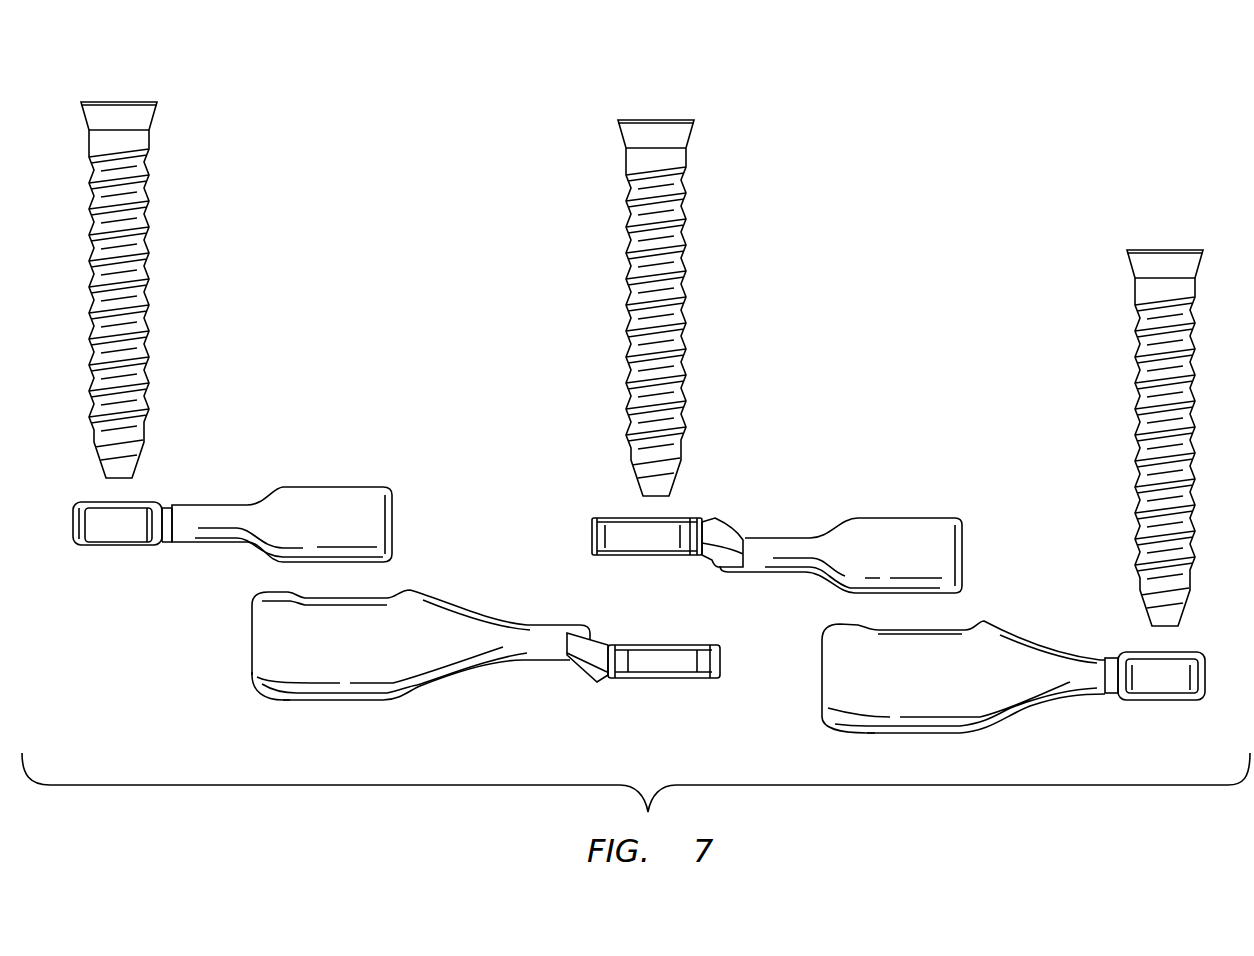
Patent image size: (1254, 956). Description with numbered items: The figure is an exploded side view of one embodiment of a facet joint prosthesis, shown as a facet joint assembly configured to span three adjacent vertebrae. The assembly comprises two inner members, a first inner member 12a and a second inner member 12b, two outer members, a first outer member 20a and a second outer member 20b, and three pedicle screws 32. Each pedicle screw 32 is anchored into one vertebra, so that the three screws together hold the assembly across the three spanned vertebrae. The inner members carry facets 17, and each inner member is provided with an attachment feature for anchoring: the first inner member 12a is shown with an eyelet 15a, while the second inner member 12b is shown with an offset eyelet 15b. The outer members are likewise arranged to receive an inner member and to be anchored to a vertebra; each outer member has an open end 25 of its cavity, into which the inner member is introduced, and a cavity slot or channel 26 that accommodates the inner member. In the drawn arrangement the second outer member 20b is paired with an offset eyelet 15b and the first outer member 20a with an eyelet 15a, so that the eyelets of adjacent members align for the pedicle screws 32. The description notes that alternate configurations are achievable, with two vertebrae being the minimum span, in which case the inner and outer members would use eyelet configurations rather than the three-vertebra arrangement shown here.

The pedicle screws 32 is at (164, 212).
The first inner member 12a is at (241, 476).
The second inner member 12b is at (829, 503).
The attachment feature/eyelet 15a is at (108, 525).
The attachment feature/offset eyelet 15b is at (618, 533).
The facets of inner member 17 is at (327, 493).
The first outer member 20a is at (1038, 622).
The second outer member 20b is at (482, 594).
The open end of cavity/outer member 25 is at (252, 690).
The cavity slot/channel 26 is at (366, 592).